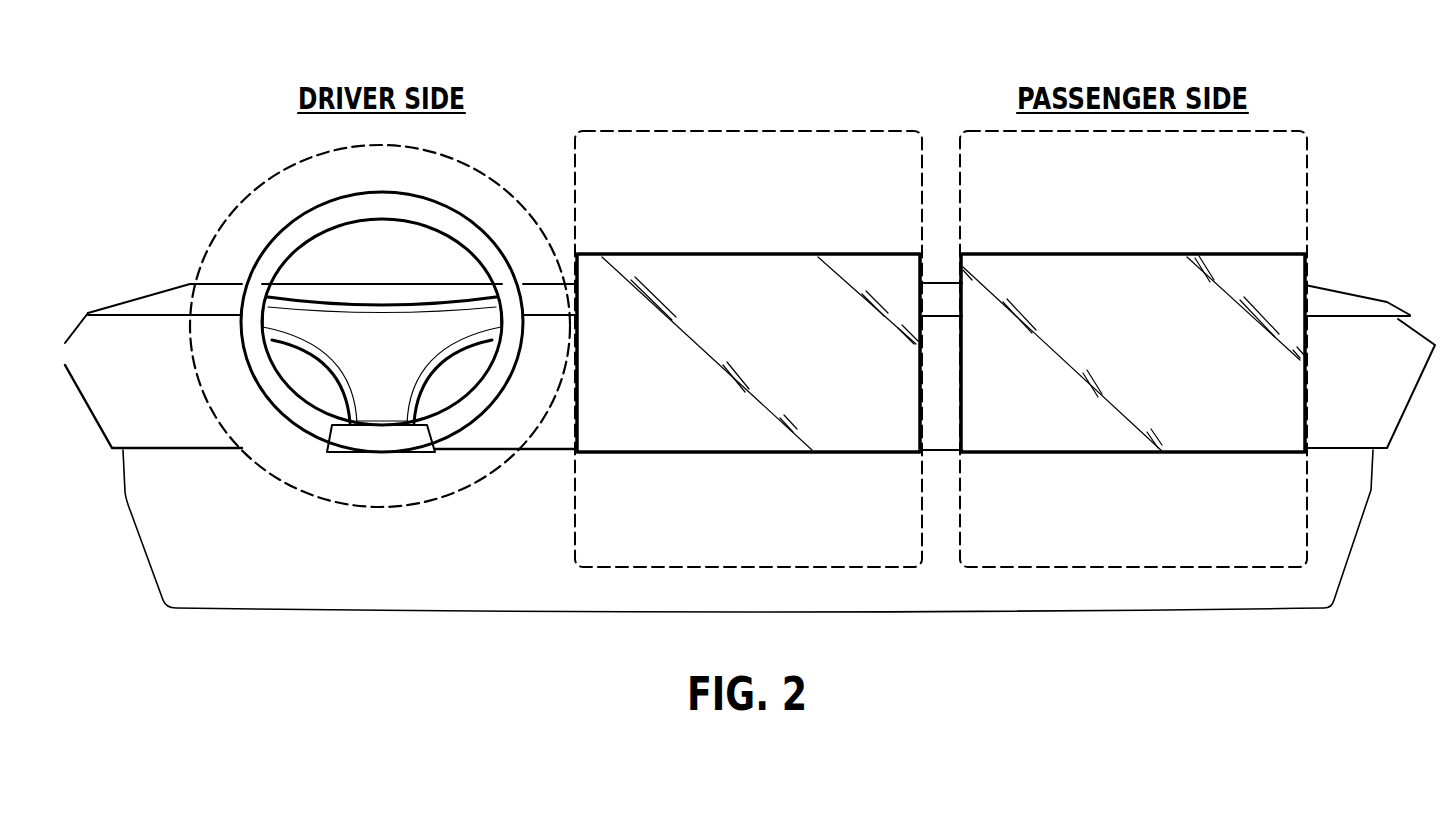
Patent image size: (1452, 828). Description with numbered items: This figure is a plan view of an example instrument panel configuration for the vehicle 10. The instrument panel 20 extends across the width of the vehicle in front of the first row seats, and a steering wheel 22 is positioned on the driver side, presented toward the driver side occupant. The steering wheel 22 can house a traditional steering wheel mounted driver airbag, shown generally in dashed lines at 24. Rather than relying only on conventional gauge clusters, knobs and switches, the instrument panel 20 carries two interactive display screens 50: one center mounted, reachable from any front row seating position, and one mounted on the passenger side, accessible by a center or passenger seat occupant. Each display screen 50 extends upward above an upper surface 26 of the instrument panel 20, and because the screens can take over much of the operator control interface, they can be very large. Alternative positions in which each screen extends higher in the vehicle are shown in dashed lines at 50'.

The vehicle 10 is at (750, 350).
The instrument panel 20 is at (520, 552).
The steering wheel 22 is at (287, 248).
The driver airbag 24 is at (465, 162).
The upper surface 26 is at (943, 268).
The display screen 50 is at (941, 325).
The alternative display screen position 50' is at (941, 302).